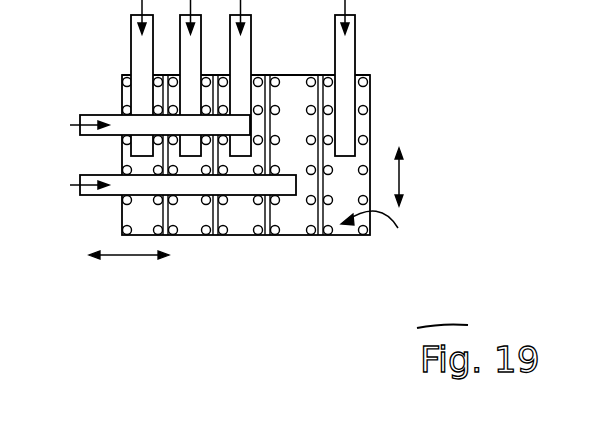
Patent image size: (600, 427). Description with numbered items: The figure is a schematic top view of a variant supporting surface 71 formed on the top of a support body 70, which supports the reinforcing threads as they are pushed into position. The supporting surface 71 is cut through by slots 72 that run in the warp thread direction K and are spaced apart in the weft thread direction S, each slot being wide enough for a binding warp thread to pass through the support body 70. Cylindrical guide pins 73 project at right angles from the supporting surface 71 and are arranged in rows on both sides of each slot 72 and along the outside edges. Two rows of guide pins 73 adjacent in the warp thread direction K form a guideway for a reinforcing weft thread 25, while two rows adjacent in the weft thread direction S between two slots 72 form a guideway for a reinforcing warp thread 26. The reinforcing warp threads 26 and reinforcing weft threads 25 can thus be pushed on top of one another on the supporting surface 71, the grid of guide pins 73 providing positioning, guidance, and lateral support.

The reinforcing weft thread 25 is at (103, 115).
The reinforcing warp thread 26 is at (137, 43).
The support body 70 is at (370, 98).
The supporting surface 71 is at (383, 236).
The slot 72 is at (217, 237).
The guide pin 73 is at (303, 75).
The warp thread direction K is at (399, 177).
The weft thread direction S is at (132, 256).